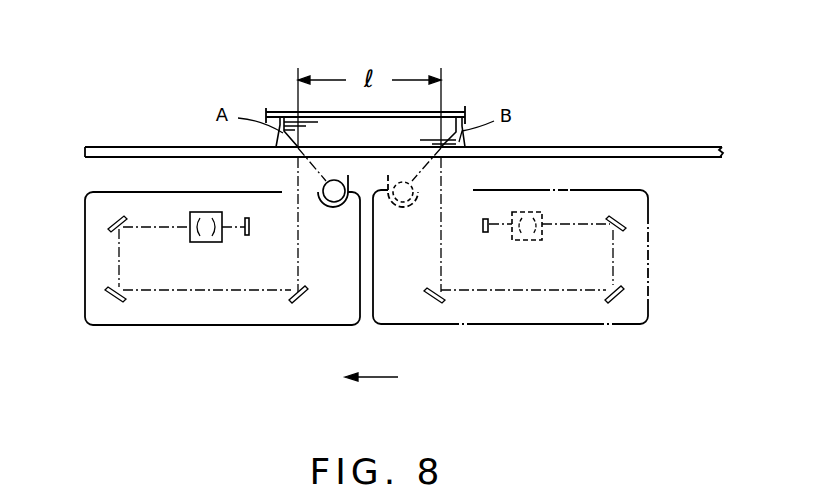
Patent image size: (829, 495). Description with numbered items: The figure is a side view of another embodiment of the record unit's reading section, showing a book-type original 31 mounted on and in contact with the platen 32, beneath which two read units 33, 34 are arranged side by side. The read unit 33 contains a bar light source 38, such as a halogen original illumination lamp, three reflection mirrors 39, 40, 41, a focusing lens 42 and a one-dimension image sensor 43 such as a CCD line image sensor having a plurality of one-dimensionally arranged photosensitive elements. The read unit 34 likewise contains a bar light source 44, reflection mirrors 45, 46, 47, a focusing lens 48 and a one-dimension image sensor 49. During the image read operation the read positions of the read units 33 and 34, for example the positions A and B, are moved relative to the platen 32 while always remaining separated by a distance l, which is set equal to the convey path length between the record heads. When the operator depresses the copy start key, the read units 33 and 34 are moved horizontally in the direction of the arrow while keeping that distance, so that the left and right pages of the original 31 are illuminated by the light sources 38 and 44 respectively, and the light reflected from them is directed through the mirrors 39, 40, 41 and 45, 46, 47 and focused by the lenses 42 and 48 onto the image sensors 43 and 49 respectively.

The book-type original 31 is at (456, 109).
The platen 32 is at (665, 146).
The read unit 33 is at (210, 326).
The read unit 34 is at (542, 327).
The bar light source 38 is at (334, 204).
The reflection mirror 39 is at (300, 302).
The reflection mirror 40 is at (108, 296).
The reflection mirror 41 is at (113, 218).
The focusing lens 42 is at (204, 243).
The one-dimension image sensor 43 is at (253, 219).
The bar light source 44 is at (410, 208).
The reflection mirror 45 is at (432, 303).
The reflection mirror 46 is at (620, 301).
The reflection mirror 47 is at (624, 219).
The focusing lens 48 is at (520, 242).
The one-dimension image sensor 49 is at (482, 221).